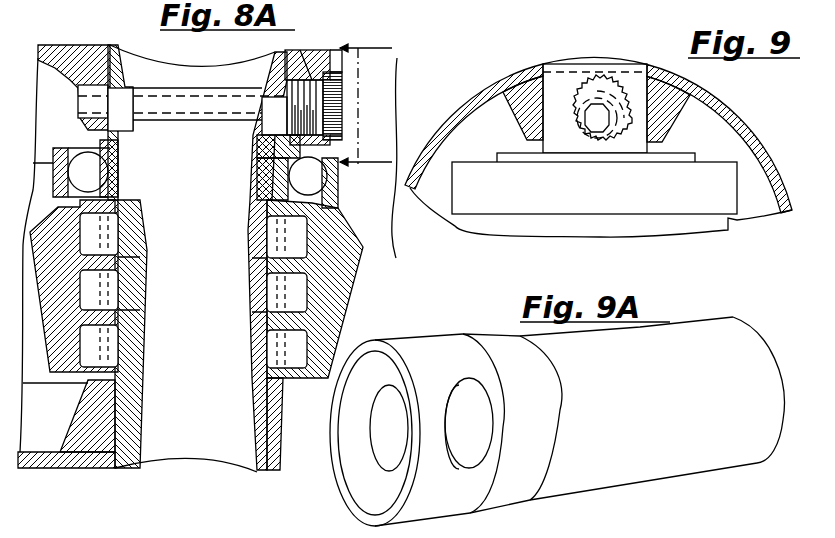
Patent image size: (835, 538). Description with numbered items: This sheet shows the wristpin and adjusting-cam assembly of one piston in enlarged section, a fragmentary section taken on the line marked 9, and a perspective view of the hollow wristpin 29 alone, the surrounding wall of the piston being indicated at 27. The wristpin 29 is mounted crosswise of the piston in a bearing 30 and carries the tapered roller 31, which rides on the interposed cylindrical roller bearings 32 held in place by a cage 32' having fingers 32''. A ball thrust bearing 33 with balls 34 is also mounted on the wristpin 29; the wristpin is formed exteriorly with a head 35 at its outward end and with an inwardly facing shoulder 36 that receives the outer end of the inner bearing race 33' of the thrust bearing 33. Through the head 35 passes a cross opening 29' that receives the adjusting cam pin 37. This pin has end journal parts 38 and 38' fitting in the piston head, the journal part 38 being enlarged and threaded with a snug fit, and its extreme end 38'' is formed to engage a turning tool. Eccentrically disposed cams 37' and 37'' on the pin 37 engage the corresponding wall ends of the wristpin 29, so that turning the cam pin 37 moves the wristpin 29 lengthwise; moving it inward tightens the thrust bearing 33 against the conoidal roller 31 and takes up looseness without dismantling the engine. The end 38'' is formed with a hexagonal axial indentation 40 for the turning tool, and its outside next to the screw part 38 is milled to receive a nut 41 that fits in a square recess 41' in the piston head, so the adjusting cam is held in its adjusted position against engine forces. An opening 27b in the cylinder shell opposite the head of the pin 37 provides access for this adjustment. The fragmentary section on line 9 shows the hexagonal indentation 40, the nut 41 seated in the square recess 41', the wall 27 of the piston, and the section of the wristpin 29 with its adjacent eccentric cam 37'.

In FIG. 8A, the housing ring 27 is at (322, 52).
In FIG. 9, the housing ring 27 is at (458, 115).
In FIG. 8A, the opening 27b is at (345, 62).
In FIG. 9, the opening 27b is at (614, 62).
In FIG. 8A, the hollow wristpin 29 is at (197, 264).
In FIG. 9, the hollow wristpin 29 is at (605, 39).
In FIG. 9A, the hollow wristpin 29 is at (623, 400).
In FIG. 8A, the cross opening 29' is at (196, 93).
In FIG. 9A, the cross opening 29' is at (431, 415).
In FIG. 8A, the bearing 30 is at (98, 470).
In FIG. 8A, the tapered roller 31 is at (352, 300).
In FIG. 9, the tapered roller 31 is at (508, 227).
In FIG. 8A, the cylindrical roller bearing 32 is at (193, 290).
In FIG. 8A, the cage 32' is at (235, 289).
In FIG. 8A, the finger 32'' is at (184, 283).
In FIG. 8A, the ball thrust bearing 33 is at (351, 187).
In FIG. 9, the ball thrust bearing 33 is at (429, 214).
In FIG. 8A, the inner bearing race 33' is at (170, 170).
In FIG. 9, the inner bearing race 33' is at (577, 151).
In FIG. 8A, the ball 34 is at (327, 181).
In FIG. 8A, the head 35 is at (110, 58).
In FIG. 9A, the head 35 is at (416, 342).
In FIG. 8A, the shoulder 36 is at (258, 146).
In FIG. 9A, the shoulder 36 is at (465, 335).
In FIG. 8A, the adjusting cam pin 37 is at (182, 77).
In FIG. 9, the adjusting cam pin 37 is at (595, 89).
In FIG. 8A, the eccentric cam part 37' is at (256, 88).
In FIG. 9, the eccentric cam part 37' is at (624, 176).
In FIG. 8A, the eccentric cam part 37'' is at (143, 118).
In FIG. 8A, the end journal part 38 is at (307, 53).
In FIG. 8A, the end journal part 38' is at (74, 101).
In FIG. 8A, the extreme end 38'' is at (336, 112).
In FIG. 8A, the hexagonal axial indentation 40 is at (345, 101).
In FIG. 9, the hexagonal axial indentation 40 is at (600, 108).
In FIG. 8A, the nut 41 is at (358, 110).
In FIG. 9, the nut 41 is at (529, 87).
In FIG. 9, the square recess 41' is at (668, 88).
In FIG. 8A, the section line 9- 9 is at (366, 108).